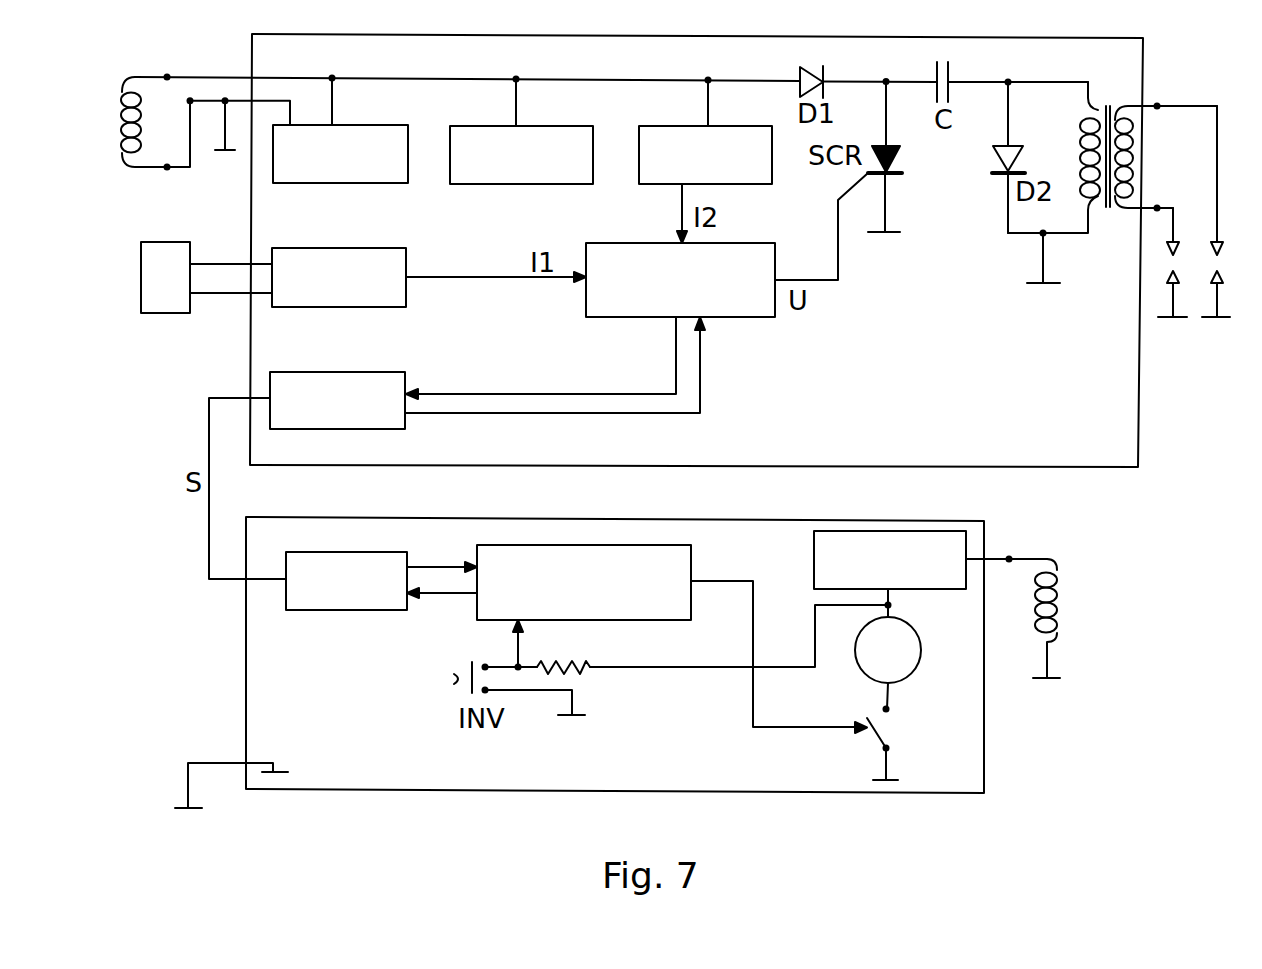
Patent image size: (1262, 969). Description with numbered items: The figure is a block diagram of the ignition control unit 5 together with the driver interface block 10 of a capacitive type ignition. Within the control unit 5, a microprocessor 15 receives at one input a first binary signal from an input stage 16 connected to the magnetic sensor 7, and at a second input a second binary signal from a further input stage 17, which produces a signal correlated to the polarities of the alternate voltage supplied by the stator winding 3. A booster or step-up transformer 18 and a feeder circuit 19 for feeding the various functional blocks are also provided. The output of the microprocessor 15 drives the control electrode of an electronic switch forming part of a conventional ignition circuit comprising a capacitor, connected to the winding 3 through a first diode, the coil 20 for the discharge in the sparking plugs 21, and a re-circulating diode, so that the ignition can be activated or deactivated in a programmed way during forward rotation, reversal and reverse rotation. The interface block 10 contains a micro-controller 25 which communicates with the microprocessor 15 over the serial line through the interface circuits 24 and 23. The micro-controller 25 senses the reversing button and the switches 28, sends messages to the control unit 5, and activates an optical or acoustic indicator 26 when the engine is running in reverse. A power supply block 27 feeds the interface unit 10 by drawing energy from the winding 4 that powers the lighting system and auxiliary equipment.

The stator winding 3 is at (194, 124).
The winding 4 is at (1059, 618).
The ignition control unit 5 is at (696, 250).
The magnetic sensor 7 is at (206, 277).
The interface block 10 is at (615, 655).
The microprocessor 15 is at (680, 280).
The input stage 16 is at (339, 277).
The further input stage 17 is at (705, 132).
The booster or step-up transformer 18 is at (521, 131).
The feeder circuit 19 is at (340, 130).
The coil 20 is at (1112, 178).
The sparking plugs 21 is at (1206, 211).
The interface circuit 23 is at (337, 400).
The interface circuit 24 is at (346, 581).
The micro-controller 25 is at (584, 582).
The optical or acoustic indicator 26 is at (888, 636).
The power supply circuit 27 is at (890, 560).
The switches 28 is at (896, 731).